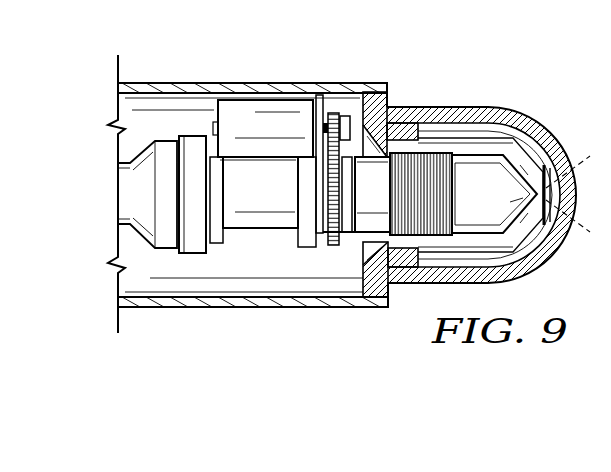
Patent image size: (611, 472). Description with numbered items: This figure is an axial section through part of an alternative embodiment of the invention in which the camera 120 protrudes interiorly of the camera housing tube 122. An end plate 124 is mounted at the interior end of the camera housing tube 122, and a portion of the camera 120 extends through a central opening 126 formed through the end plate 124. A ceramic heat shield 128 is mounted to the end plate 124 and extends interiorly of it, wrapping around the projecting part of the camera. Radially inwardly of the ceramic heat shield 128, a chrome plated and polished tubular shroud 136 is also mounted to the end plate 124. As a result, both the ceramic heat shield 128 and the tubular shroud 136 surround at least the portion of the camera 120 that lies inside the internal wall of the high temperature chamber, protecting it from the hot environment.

The camera 120 is at (253, 113).
The camera housing tube 122 is at (178, 85).
The end plate 124 is at (390, 97).
The central opening 126 is at (365, 242).
The ceramic heat shield 128 is at (490, 106).
The tubular shroud 136 is at (537, 140).